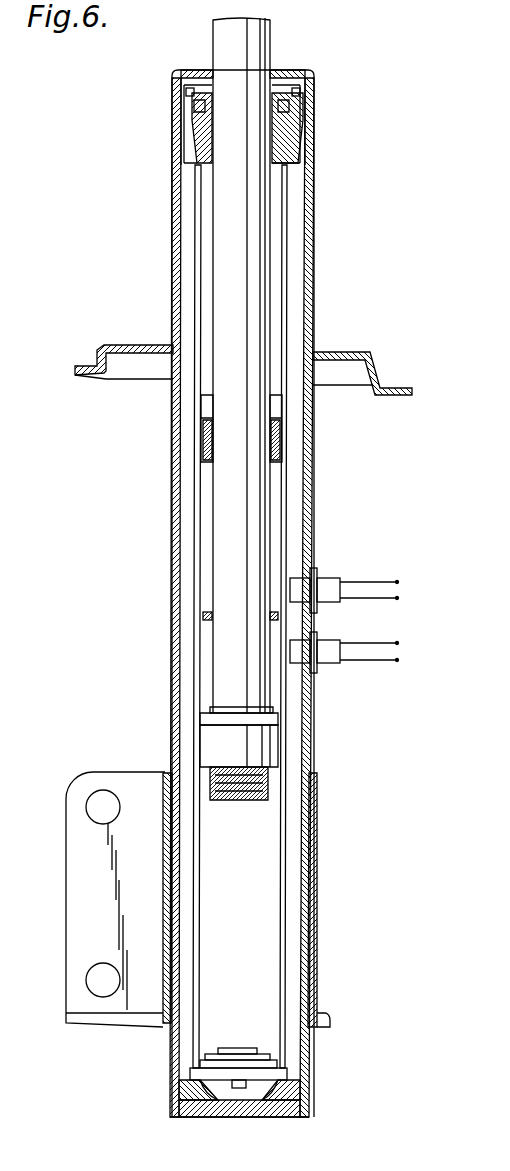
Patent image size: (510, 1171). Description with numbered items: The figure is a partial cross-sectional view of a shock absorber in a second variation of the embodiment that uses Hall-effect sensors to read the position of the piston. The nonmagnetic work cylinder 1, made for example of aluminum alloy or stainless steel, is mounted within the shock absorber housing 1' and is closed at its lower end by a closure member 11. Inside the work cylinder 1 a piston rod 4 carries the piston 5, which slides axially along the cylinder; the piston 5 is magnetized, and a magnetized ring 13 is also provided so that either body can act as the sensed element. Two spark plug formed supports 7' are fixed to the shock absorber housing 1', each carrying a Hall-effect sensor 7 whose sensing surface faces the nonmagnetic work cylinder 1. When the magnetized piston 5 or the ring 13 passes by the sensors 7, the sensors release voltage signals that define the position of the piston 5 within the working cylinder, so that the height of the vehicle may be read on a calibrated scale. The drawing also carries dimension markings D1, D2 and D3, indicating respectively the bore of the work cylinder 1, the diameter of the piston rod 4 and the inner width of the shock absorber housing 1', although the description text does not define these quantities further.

The work cylinder 1 is at (276, 616).
The shock absorber housing 1' is at (239, 593).
The piston rod 4 is at (252, 127).
The piston 5 is at (272, 738).
The Hall-effect sensor 7 is at (288, 715).
The spark plug formed support 7' is at (378, 621).
The closure member 11 is at (297, 1083).
The ring 13 is at (202, 614).
The inner diameter of cylinder D1 is at (202, 505).
The piston rod diameter D2 is at (269, 288).
The outer tube inner diameter D3 is at (305, 561).